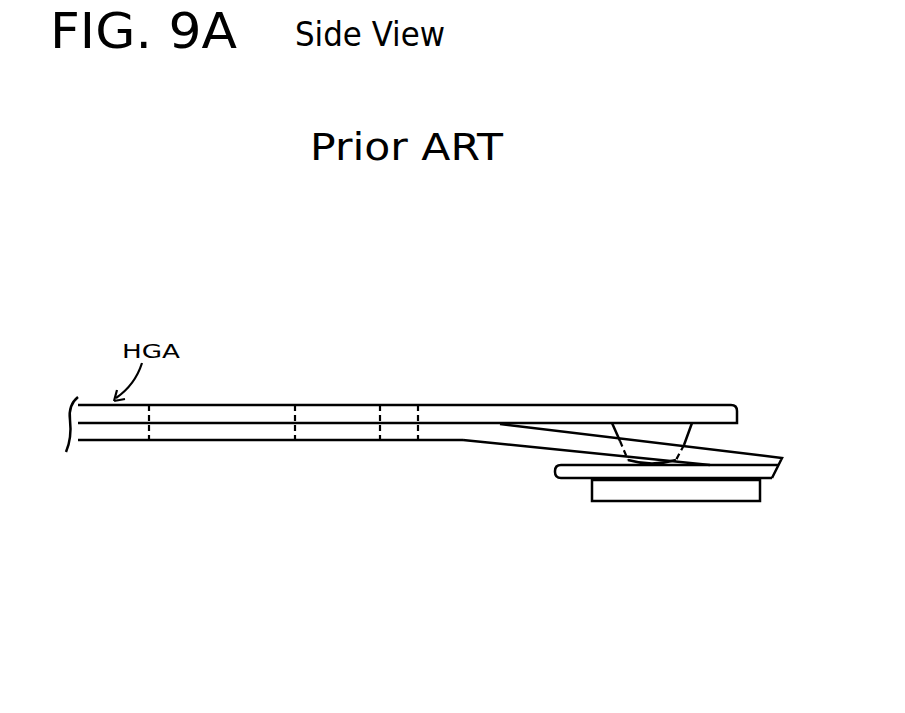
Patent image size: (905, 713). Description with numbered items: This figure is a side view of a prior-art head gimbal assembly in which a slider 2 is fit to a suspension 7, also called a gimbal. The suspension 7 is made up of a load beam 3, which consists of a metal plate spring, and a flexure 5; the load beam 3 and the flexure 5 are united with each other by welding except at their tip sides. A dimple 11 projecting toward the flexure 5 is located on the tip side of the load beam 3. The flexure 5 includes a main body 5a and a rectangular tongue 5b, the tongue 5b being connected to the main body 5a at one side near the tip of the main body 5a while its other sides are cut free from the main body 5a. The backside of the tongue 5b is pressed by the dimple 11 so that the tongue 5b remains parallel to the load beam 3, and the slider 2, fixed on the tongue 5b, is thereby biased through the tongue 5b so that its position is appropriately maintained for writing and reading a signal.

The slider 2 is at (677, 490).
The load beam 3 is at (438, 412).
The flexure 5 is at (335, 435).
The main body 5a is at (508, 438).
The tongue 5b is at (577, 482).
The suspension 7 is at (475, 263).
The dimple 11 is at (673, 438).